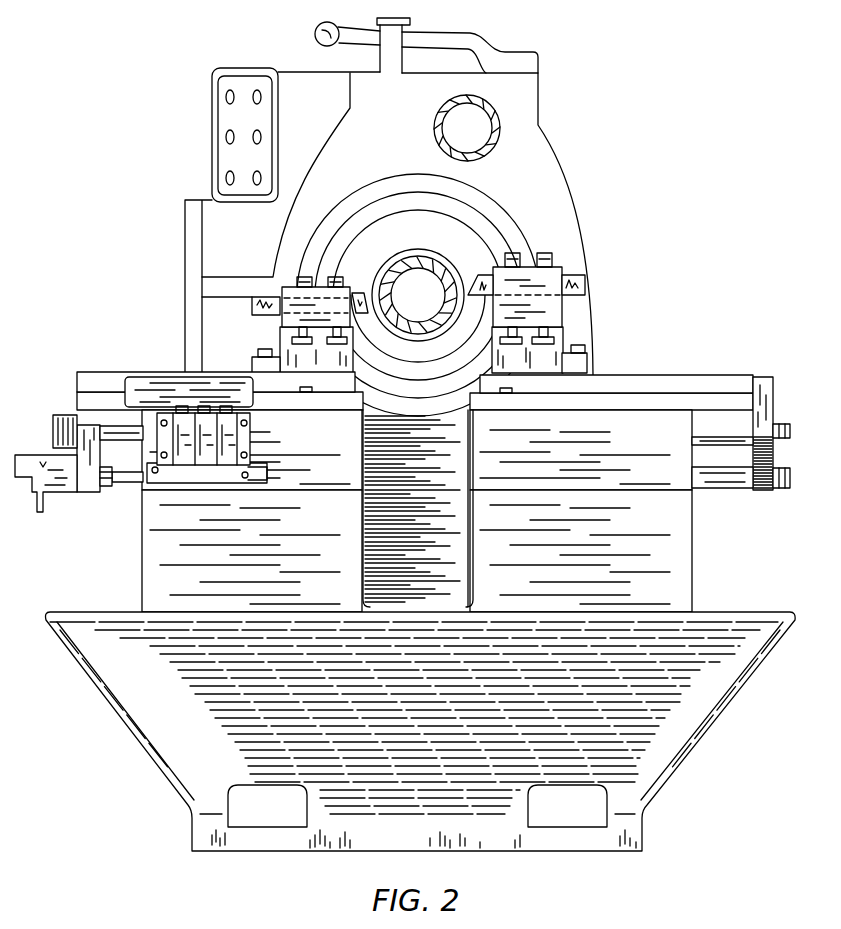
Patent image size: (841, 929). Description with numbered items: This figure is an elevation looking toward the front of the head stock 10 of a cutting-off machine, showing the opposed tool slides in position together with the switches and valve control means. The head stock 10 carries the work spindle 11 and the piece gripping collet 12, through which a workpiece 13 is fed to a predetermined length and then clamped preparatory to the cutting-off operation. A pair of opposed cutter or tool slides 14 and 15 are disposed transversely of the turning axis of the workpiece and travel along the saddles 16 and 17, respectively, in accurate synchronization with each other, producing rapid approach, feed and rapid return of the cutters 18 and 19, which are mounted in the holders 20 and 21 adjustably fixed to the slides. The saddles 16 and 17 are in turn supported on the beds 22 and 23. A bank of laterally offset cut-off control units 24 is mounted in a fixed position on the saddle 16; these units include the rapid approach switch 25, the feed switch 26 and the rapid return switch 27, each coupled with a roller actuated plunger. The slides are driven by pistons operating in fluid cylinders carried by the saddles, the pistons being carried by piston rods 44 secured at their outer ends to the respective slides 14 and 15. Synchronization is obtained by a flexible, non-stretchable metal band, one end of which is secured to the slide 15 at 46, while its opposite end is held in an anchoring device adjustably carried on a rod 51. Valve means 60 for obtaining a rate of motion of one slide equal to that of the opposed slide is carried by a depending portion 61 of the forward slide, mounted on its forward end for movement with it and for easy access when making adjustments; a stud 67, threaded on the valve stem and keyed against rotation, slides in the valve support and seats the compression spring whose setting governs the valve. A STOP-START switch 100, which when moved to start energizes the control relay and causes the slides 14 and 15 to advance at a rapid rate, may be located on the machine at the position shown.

The head stock 10 is at (389, 197).
The work spindle 11 is at (478, 196).
The piece gripping collet 12 is at (423, 260).
The workpiece 13 is at (441, 272).
The tool slide 14 is at (220, 389).
The tool slide 15 is at (611, 390).
The saddle 16 is at (331, 403).
The saddle 17 is at (571, 403).
The cutter 18 is at (358, 292).
The cutter 19 is at (485, 296).
The holder 20 is at (284, 302).
The holder 21 is at (556, 313).
The bed 22 is at (142, 583).
The bed 23 is at (693, 560).
The bank of cut-off control units 24 is at (262, 437).
The rapid approach switch 25 is at (232, 465).
The feed switch 26 is at (209, 465).
The rapid return switch 27 is at (186, 465).
The piston rod 44 is at (121, 448).
The band attachment point 46 is at (791, 478).
The rod 51 is at (128, 484).
The valve means 60 is at (58, 496).
The depending portion 61 is at (78, 450).
The stud 67 is at (105, 488).
The STOP-START switch 100 is at (226, 178).